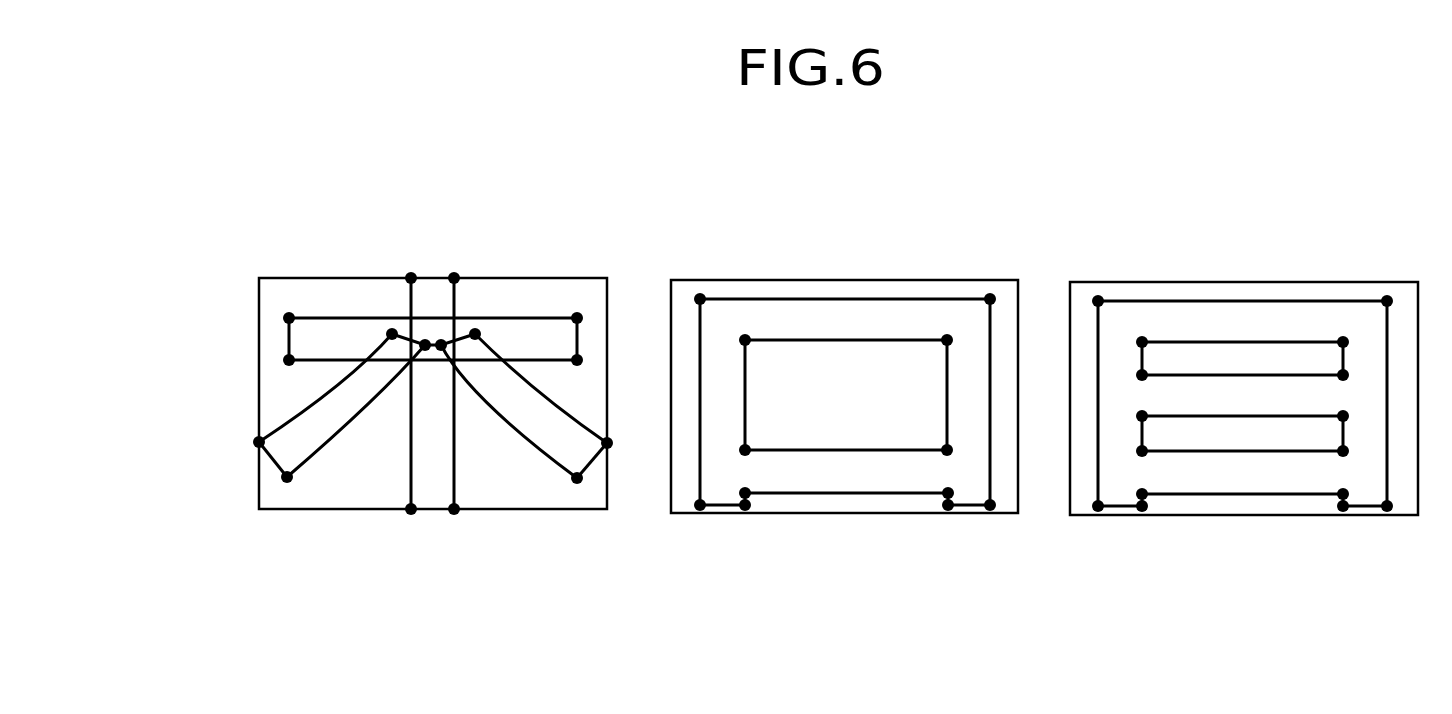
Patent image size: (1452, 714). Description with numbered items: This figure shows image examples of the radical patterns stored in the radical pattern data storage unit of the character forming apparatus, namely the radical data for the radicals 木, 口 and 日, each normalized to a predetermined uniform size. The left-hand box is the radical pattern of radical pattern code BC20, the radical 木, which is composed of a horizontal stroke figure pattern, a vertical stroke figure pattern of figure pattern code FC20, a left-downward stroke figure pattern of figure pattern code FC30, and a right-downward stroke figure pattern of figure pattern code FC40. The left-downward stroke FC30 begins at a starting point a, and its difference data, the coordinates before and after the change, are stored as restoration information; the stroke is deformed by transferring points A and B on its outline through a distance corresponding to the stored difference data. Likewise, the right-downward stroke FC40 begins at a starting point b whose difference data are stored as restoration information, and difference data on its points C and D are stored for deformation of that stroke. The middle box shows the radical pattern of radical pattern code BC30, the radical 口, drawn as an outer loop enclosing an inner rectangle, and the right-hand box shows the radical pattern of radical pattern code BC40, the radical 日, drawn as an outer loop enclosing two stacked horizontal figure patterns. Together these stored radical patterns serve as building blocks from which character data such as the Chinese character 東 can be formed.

The figure pattern code of vertical stroke FC20 is at (432, 278).
The figure pattern code of left-downward stroke FC30 is at (275, 465).
The figure pattern code of right-downward stroke FC40 is at (540, 455).
The radical pattern code of radical 木 BC20 is at (433, 427).
The radical pattern code of radical 口 BC30 is at (844, 429).
The radical pattern code of radical 日 BC40 is at (1244, 430).
The point A on outline of figure pattern FC30 A is at (390, 334).
The point B on outline of figure pattern FC30 B is at (257, 441).
The point C on figure pattern FC40 C is at (477, 331).
The point D on figure pattern FC40 D is at (610, 447).
The starting point of figure pattern FC30 a is at (425, 350).
The starting point of figure pattern FC40 b is at (441, 340).